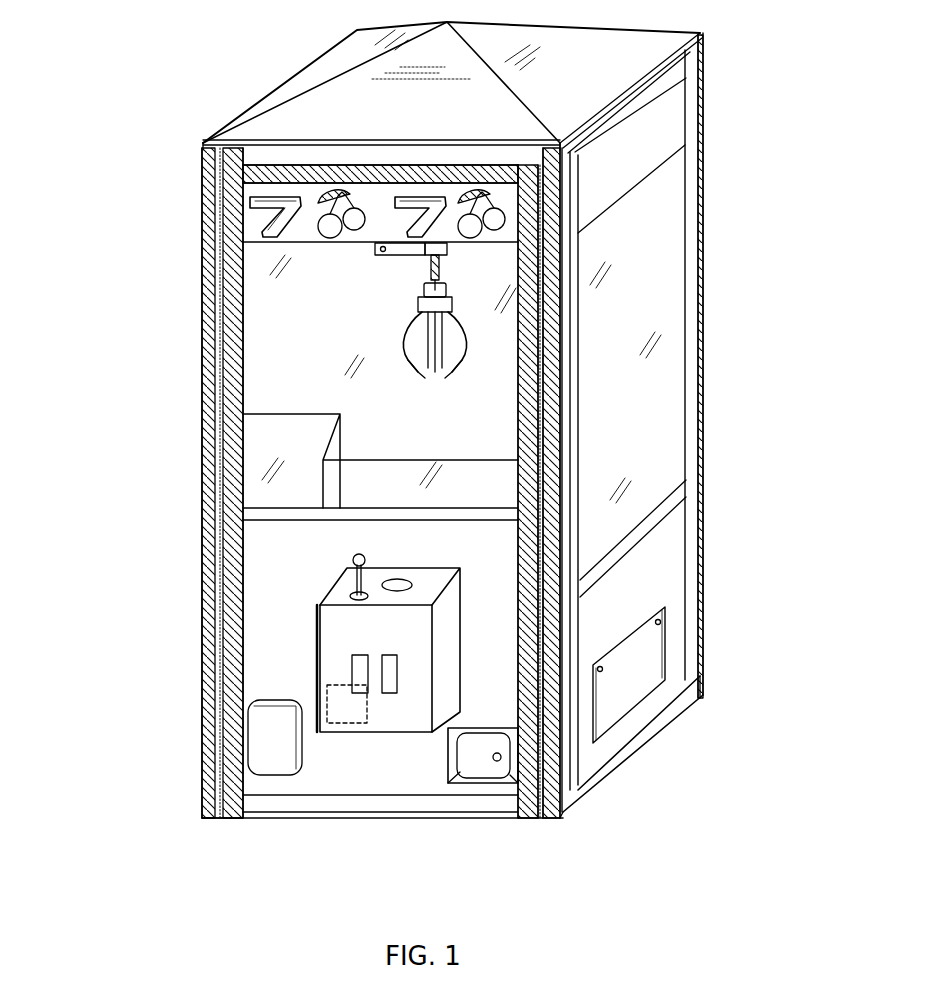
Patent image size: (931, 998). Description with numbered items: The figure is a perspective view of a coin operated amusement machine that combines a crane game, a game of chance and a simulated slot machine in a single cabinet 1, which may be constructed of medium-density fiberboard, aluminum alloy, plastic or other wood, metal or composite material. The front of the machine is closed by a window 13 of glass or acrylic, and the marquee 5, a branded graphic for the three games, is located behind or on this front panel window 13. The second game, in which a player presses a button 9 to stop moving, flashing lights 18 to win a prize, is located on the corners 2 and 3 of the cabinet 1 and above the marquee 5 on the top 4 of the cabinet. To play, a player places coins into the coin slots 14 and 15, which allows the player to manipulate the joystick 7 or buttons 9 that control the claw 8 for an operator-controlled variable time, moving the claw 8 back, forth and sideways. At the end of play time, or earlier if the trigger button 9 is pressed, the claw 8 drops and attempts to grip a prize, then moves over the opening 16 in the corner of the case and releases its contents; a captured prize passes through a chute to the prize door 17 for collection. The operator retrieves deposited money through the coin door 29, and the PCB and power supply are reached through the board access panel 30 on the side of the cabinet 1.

The cabinet 1 is at (298, 70).
The corner of the cabinet 2 is at (205, 256).
The corner of the cabinet 3 is at (530, 368).
The top of the cabinet 4 is at (203, 145).
The marquee 5 is at (506, 198).
The joystick 7 is at (346, 570).
The claw 8 is at (462, 297).
The button 9 is at (428, 578).
The window 13 is at (307, 360).
The coin slot 14 is at (360, 695).
The coin slot 15 is at (397, 697).
The opening 16 is at (297, 473).
The prize door 17 is at (241, 814).
The flashing lights 18 is at (512, 175).
The coin door 29 is at (545, 812).
The board access panel 30 is at (623, 672).